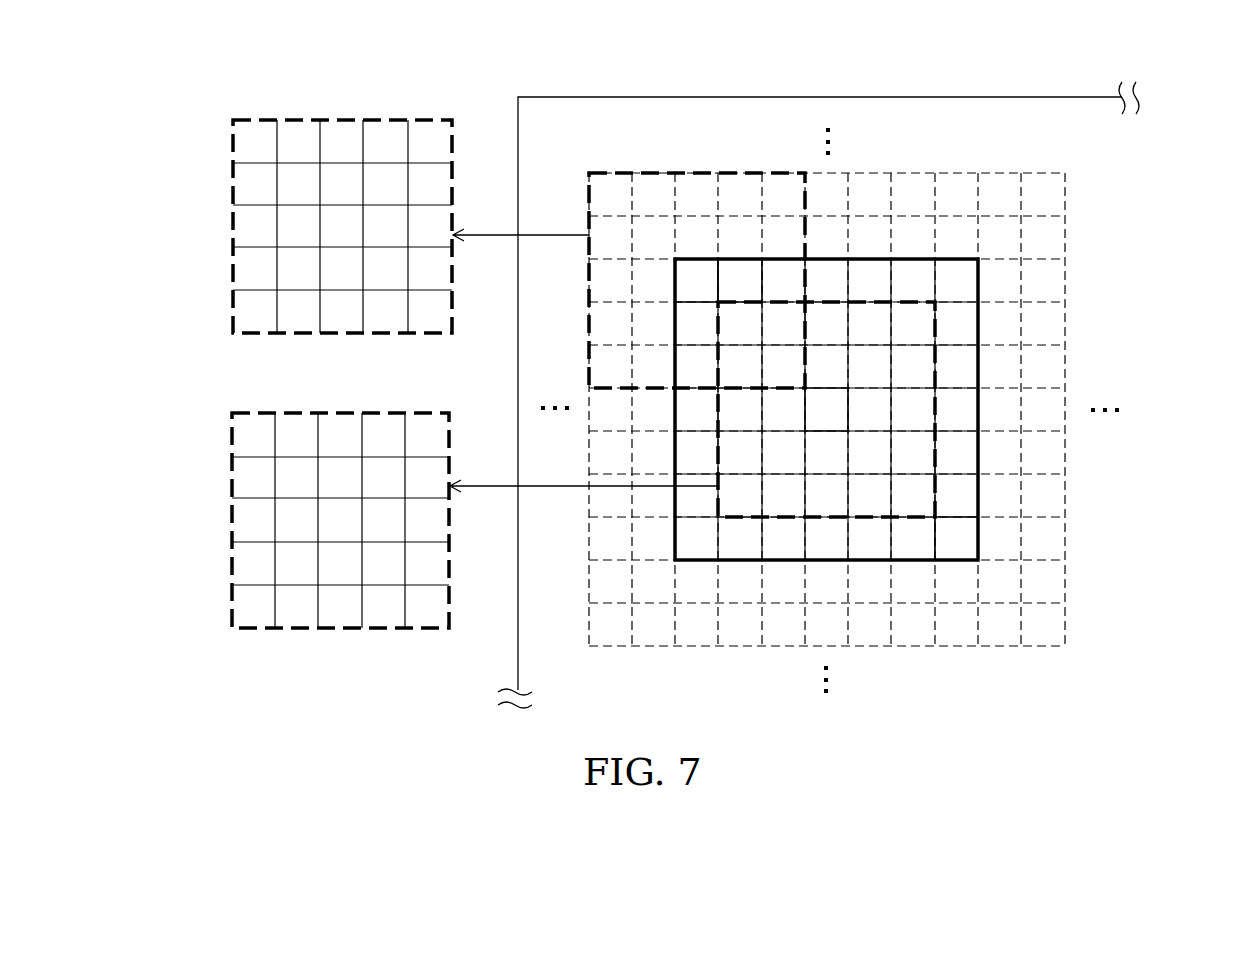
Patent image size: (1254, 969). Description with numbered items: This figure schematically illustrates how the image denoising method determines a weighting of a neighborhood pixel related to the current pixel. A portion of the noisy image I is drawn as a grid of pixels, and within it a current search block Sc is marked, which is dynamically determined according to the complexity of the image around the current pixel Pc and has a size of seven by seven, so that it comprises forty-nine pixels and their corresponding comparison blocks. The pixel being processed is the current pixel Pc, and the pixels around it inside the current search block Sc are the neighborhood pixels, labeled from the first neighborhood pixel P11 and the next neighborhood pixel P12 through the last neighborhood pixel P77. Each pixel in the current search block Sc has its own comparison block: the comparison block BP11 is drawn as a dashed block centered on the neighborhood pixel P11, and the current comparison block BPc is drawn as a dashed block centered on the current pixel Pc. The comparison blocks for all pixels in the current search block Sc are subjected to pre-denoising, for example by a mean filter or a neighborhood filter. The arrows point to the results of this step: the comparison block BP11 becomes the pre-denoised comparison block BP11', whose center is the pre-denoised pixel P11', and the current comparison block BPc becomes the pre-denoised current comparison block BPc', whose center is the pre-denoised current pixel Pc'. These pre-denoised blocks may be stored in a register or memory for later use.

The noisy image I is at (968, 97).
The current search block Sc is at (977, 322).
The comparison block for neighborhood pixel P11 BP11 is at (649, 215).
The current comparison block BPc is at (962, 409).
The neighborhood pixel P11 is at (696, 280).
The neighborhood pixel P12 is at (740, 280).
The current pixel Pc is at (826, 409).
The neighborhood pixel P77 is at (956, 538).
The pre-denoised neighborhood pixel P11' is at (342, 226).
The pre-denoised comparison block BP11' is at (299, 194).
The pre-denoised current pixel Pc' is at (340, 520).
The pre-denoised current comparison block BPc' is at (291, 520).